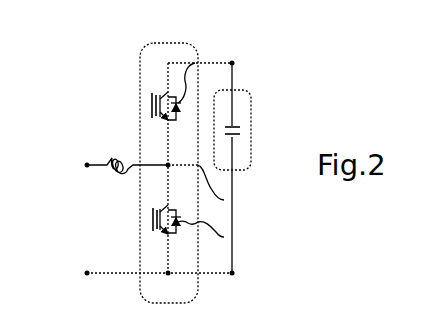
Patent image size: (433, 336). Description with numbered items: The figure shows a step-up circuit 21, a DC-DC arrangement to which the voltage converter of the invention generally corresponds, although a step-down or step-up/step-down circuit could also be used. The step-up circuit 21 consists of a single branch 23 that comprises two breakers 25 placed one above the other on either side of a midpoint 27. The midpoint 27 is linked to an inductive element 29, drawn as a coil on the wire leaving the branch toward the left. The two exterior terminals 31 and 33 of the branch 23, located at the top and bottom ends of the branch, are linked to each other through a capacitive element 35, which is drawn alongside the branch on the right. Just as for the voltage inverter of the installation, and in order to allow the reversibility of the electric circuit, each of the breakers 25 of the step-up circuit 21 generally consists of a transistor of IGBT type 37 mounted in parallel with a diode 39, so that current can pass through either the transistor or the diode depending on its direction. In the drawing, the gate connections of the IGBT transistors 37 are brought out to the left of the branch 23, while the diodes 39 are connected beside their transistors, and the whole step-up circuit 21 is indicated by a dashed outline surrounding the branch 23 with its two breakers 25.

The step-up circuit 21 is at (210, 308).
The branch 23 is at (155, 43).
The breakers 25 is at (162, 84).
The midpoint 27 is at (224, 200).
The inductive element 29 is at (112, 160).
The exterior terminal 31 is at (236, 61).
The exterior terminal 33 is at (235, 271).
The capacitive element 35 is at (252, 113).
The transistor of IGBT type 37 is at (152, 104).
The diode 39 is at (197, 61).